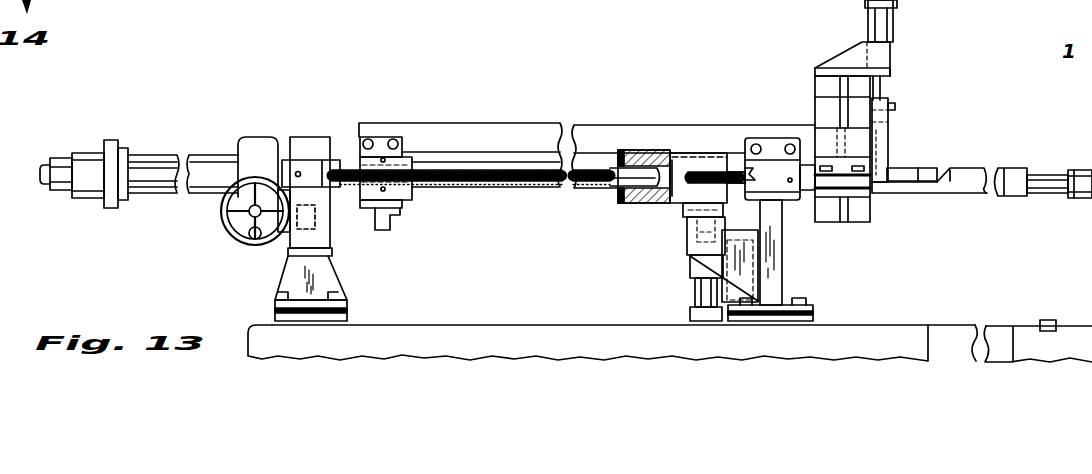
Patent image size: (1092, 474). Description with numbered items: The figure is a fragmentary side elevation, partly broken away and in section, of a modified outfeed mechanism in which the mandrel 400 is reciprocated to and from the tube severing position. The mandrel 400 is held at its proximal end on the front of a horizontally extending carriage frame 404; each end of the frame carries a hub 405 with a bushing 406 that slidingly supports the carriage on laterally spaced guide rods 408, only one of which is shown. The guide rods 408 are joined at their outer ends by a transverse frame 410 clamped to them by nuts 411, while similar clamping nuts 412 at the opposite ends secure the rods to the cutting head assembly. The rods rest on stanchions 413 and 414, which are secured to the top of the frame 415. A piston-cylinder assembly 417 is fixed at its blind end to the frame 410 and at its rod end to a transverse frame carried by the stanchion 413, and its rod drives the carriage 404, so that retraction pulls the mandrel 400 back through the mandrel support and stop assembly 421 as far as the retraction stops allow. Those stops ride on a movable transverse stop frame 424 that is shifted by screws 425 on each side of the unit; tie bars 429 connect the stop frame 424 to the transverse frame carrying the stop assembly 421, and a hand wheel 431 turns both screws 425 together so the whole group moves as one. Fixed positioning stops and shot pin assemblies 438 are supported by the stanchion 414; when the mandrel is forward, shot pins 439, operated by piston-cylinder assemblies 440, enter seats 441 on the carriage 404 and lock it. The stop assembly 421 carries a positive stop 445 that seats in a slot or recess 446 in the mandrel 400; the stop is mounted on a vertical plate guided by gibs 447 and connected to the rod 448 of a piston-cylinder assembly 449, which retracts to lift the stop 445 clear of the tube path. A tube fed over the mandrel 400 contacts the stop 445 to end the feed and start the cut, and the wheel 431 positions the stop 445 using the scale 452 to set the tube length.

The mandrel 400 is at (936, 194).
The carriage frame 404 is at (705, 148).
The hub 405 is at (678, 156).
The bushing 406 is at (620, 206).
The guide rod 408 is at (208, 166).
The transverse frame 410 is at (110, 208).
The clamping nut 411 is at (62, 158).
The clamping nut 412 is at (1080, 168).
The stanchion 413 is at (335, 283).
The stanchion 414 is at (772, 268).
The frame 415 is at (487, 328).
The piston-cylinder assembly 417 is at (160, 160).
The mandrel support and stop assembly 421 is at (905, 115).
The movable transverse stop frame 424 is at (396, 218).
The screw 425 is at (498, 184).
The tie bar 429 is at (487, 134).
The hand wheel 431 is at (222, 220).
The shot pin assembly 438 is at (690, 240).
The shot pin 439 is at (690, 222).
The piston-cylinder assembly 440 is at (694, 290).
The seat 441 is at (683, 209).
The positive stop 445 is at (924, 174).
The slot or recess 446 is at (944, 172).
The gib 447 is at (892, 141).
The rod 448 is at (882, 86).
The piston-cylinder assembly 449 is at (896, 20).
The scale 452 is at (771, 178).